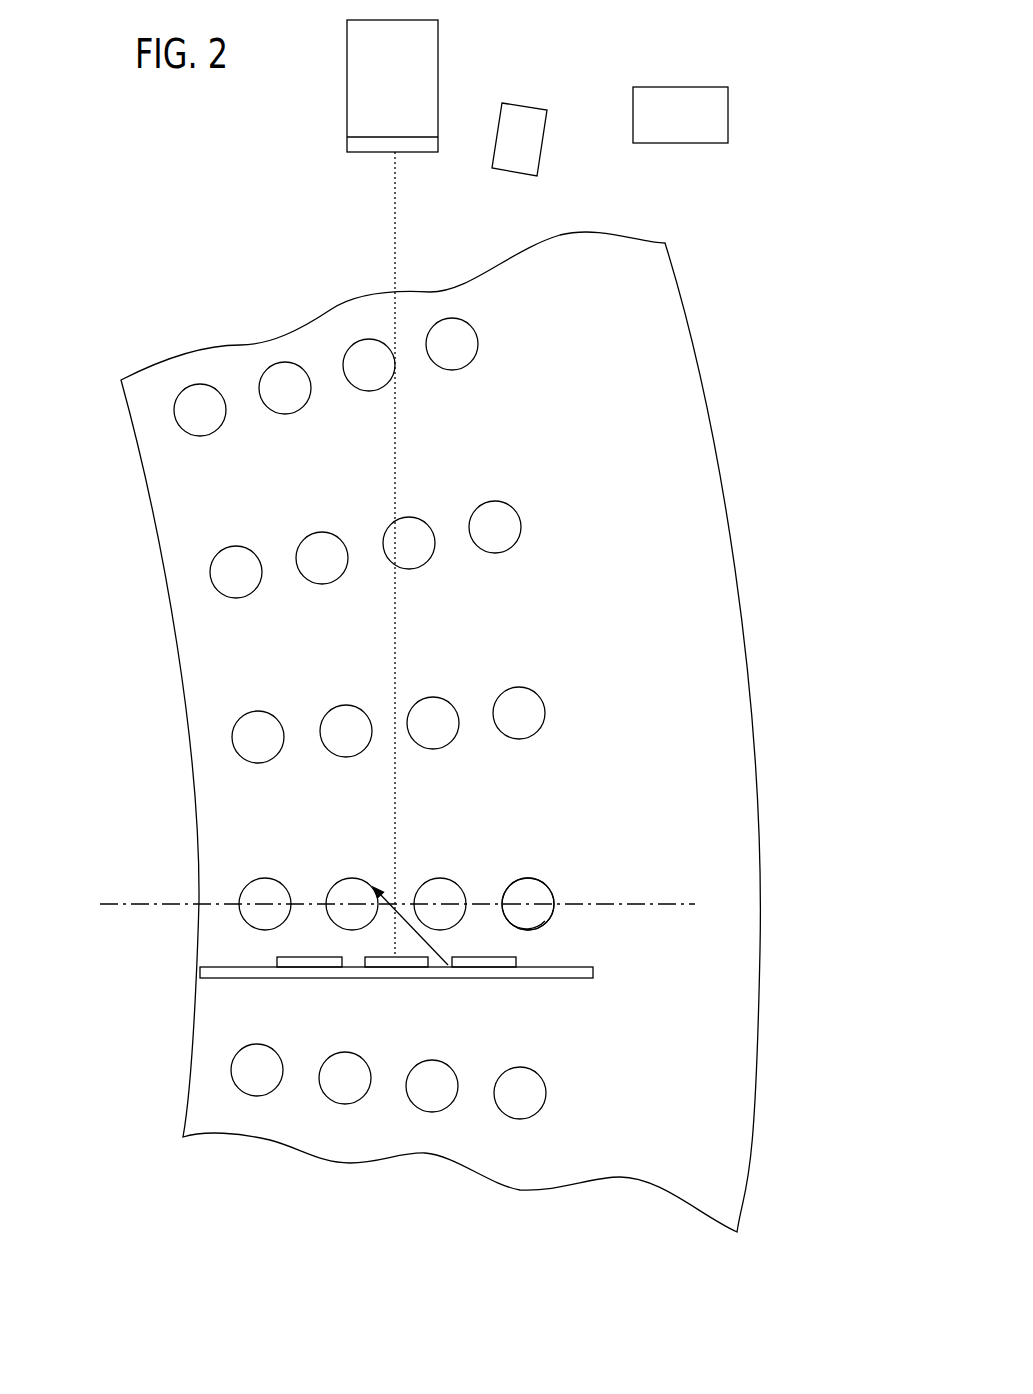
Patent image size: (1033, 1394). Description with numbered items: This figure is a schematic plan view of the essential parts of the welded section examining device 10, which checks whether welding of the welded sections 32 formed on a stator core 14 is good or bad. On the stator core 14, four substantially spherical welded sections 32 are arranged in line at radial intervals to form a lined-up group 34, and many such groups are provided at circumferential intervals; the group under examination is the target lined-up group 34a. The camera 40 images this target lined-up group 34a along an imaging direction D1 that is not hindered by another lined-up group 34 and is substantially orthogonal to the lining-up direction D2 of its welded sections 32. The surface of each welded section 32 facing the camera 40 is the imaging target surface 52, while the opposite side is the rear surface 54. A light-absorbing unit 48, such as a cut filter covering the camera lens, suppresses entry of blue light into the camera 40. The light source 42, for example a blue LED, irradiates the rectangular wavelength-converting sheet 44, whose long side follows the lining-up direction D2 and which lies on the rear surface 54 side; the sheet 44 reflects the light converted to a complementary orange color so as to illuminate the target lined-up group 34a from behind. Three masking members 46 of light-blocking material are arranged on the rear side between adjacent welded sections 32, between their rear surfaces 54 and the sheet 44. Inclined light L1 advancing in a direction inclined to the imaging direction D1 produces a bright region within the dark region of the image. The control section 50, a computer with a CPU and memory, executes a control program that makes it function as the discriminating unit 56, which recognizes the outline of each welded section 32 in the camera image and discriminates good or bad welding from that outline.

The welded section examining device 10 is at (193, 136).
The stator core 14 is at (670, 389).
The welded section 32 is at (341, 753).
The lined-up group 34 is at (210, 728).
The target lined-up group 34a is at (225, 885).
The camera 40 is at (360, 48).
The light source 42 is at (530, 113).
The wavelength-converting sheet 44 is at (573, 970).
The masking member 46 is at (312, 957).
The light-absorbing unit 48 is at (365, 143).
The control section 50 is at (700, 90).
The discriminating unit 56 is at (705, 87).
The imaging target surface 52 is at (522, 880).
The rear surface 54 is at (530, 928).
The imaging direction D1 is at (390, 242).
The lining-up direction D2 is at (653, 903).
The inclined light L1 is at (418, 937).